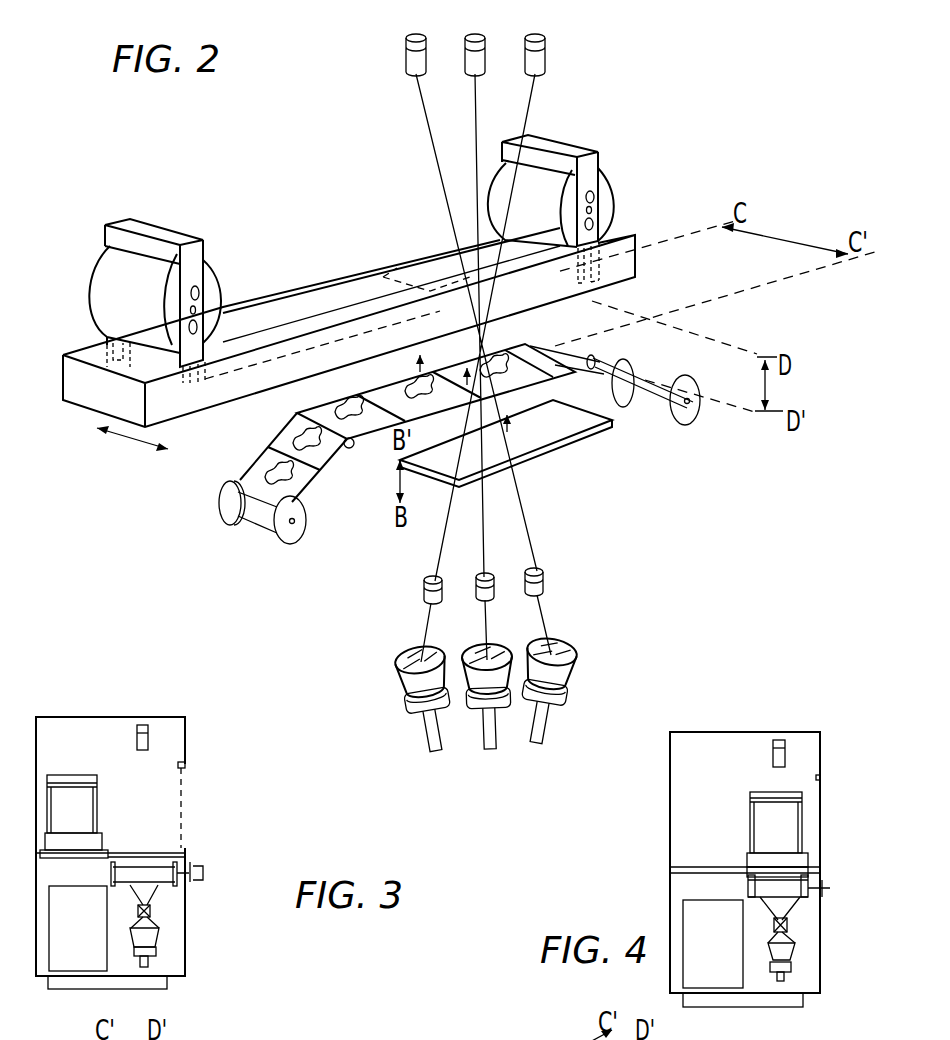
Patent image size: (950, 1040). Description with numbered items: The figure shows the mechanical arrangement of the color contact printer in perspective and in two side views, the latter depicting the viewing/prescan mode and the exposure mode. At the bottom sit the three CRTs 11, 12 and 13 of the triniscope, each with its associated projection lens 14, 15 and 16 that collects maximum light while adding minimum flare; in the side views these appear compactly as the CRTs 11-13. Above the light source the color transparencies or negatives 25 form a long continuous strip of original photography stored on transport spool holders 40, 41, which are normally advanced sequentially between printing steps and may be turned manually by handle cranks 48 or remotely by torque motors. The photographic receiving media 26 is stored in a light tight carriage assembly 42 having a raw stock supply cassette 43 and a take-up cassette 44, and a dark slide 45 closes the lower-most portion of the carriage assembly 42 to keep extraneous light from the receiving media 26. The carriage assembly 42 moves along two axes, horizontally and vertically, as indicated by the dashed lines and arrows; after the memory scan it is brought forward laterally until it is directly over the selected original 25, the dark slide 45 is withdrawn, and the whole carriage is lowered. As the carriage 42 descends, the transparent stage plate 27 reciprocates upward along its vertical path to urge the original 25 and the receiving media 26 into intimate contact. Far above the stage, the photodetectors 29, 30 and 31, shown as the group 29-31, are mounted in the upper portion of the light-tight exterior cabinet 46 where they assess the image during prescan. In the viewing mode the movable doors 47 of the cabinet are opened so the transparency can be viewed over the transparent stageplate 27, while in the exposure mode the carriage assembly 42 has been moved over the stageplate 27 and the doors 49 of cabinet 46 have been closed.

In FIG. 2, the CRT 11 is at (400, 691).
In FIG. 2, the CRT 12 is at (470, 699).
In FIG. 2, the CRT 13 is at (580, 690).
In FIG. 2, the projection lens 14 is at (424, 590).
In FIG. 2, the projection lens 15 is at (493, 592).
In FIG. 2, the projection lens 16 is at (545, 584).
In FIG. 2, the color transparency strip 25 is at (329, 470).
In FIG. 2, the photographic image receiving media 26 is at (421, 300).
In FIG. 2, the transparent stage plate 27 is at (580, 442).
In FIG. 3, the transparent stage plate 27 is at (140, 867).
In FIG. 4, the transparent stage plate 27 is at (747, 880).
In FIG. 2, the red photodetector 29 is at (410, 57).
In FIG. 2, the green photodetector 30 is at (480, 53).
In FIG. 2, the blue photodetector 31 is at (540, 51).
In FIG. 2, the transport spool holder 40 is at (287, 544).
In FIG. 3, the transport spool holder 40 is at (185, 884).
In FIG. 4, the transport spool holder 40 is at (812, 897).
In FIG. 2, the transport spool holder 41 is at (688, 420).
In FIG. 2, the light tight carriage assembly 42 is at (215, 398).
In FIG. 3, the light tight carriage assembly 42 is at (52, 843).
In FIG. 4, the light tight carriage assembly 42 is at (757, 860).
In FIG. 2, the raw stock supply cassette 43 is at (160, 236).
In FIG. 3, the raw stock supply cassette 43 is at (78, 776).
In FIG. 4, the raw stock supply cassette 43 is at (762, 812).
In FIG. 2, the take-up cassette 44 is at (590, 148).
In FIG. 2, the dark slide 45 is at (333, 280).
In FIG. 4, the dark slide 45 is at (688, 862).
In FIG. 3, the light-tight exterior cabinet 46 is at (105, 717).
In FIG. 4, the light-tight exterior cabinet 46 is at (738, 732).
In FIG. 3, the movable doors 47 is at (88, 958).
In FIG. 4, the movable doors 47 is at (723, 975).
In FIG. 3, the handle crank 48 is at (203, 871).
In FIG. 4, the handle crank 48 is at (832, 886).
In FIG. 3, the doors 49 is at (182, 806).
In FIG. 3, the photodetectors 29-31 is at (150, 737).
In FIG. 4, the photodetectors 29-31 is at (787, 749).
In FIG. 3, the CRTs 11-13 is at (156, 958).
In FIG. 4, the CRTs 11-13 is at (793, 973).